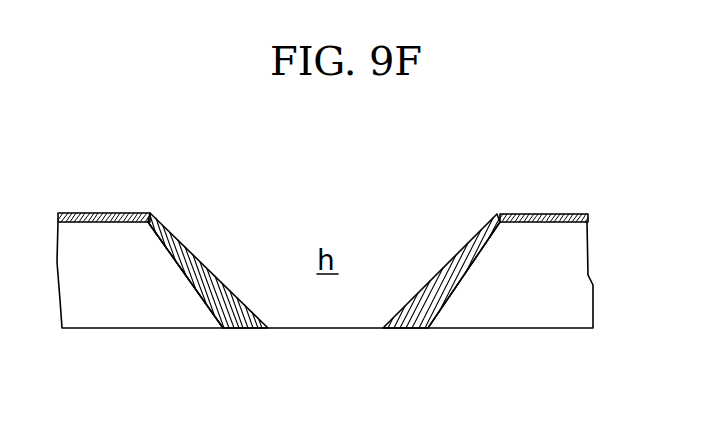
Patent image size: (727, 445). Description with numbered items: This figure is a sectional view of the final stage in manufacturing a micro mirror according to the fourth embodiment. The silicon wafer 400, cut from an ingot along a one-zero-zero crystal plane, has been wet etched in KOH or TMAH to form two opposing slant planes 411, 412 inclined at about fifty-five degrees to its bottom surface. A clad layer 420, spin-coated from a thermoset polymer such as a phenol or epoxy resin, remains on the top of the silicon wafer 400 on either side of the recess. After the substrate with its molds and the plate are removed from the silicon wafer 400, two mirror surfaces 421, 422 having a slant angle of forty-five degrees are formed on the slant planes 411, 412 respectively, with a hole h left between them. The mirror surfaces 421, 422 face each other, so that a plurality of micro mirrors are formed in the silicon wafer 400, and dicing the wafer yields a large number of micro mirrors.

The silicon wafer 400 is at (567, 255).
The clad layer 420 is at (590, 220).
The mirror surface 421 is at (435, 278).
The mirror surface 422 is at (200, 260).
The slant plane 411 is at (475, 241).
The slant plane 412 is at (172, 233).